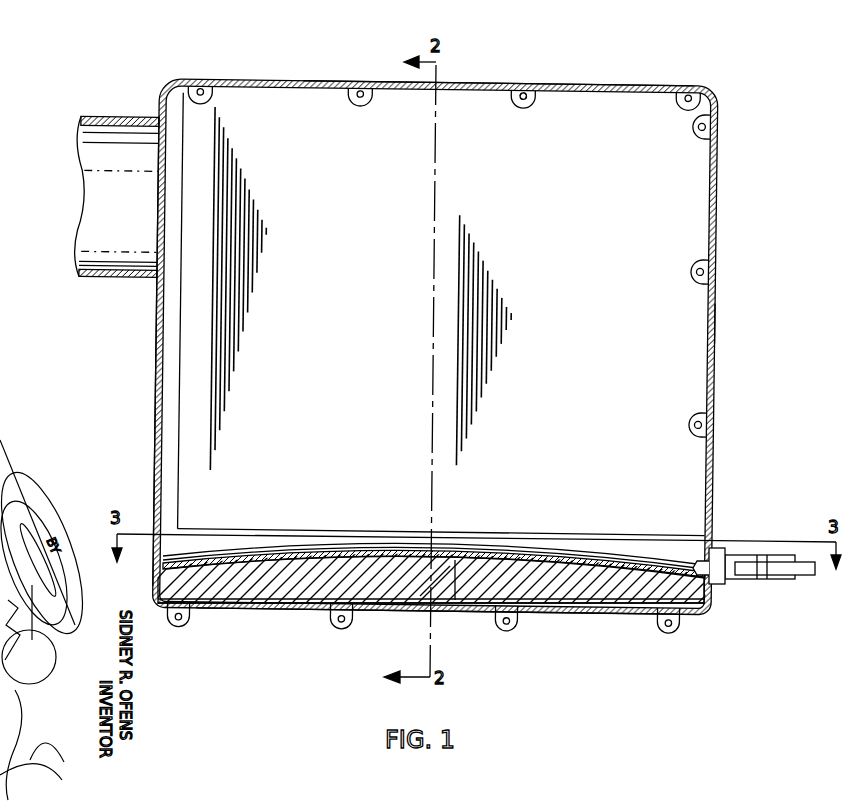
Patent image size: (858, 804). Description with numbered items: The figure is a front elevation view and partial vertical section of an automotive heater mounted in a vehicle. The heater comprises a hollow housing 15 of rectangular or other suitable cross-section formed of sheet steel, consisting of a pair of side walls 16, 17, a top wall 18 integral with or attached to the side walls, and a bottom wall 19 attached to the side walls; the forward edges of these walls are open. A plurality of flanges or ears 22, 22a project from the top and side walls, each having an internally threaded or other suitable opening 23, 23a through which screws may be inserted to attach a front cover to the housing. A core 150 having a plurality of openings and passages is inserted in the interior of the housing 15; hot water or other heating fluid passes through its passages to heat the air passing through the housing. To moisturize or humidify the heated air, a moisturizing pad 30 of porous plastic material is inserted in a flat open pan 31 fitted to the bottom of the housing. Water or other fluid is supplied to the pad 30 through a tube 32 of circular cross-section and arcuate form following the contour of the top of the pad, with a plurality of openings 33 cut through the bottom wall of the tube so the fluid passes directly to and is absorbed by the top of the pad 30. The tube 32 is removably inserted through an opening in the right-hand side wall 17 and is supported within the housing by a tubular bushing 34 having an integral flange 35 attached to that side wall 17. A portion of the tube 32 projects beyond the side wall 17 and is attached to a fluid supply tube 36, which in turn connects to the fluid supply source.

The hollow housing 15 is at (545, 83).
The side wall 16 is at (153, 365).
The side wall 17 is at (714, 322).
The top wall 18 is at (622, 84).
The bottom wall 19 is at (540, 611).
The flange or ear 22 is at (521, 107).
The flange or ear 22a is at (688, 268).
The opening 23 is at (512, 103).
The opening 23a is at (690, 430).
The moisturizing pad 30 is at (300, 600).
The flat open pan 31 is at (590, 606).
The tube 32 is at (303, 541).
The openings 33 is at (423, 581).
The tubular bushing 34 is at (725, 548).
The flange 35 is at (225, 578).
The fluid supply tube 36 is at (455, 600).
The core 150 is at (680, 200).